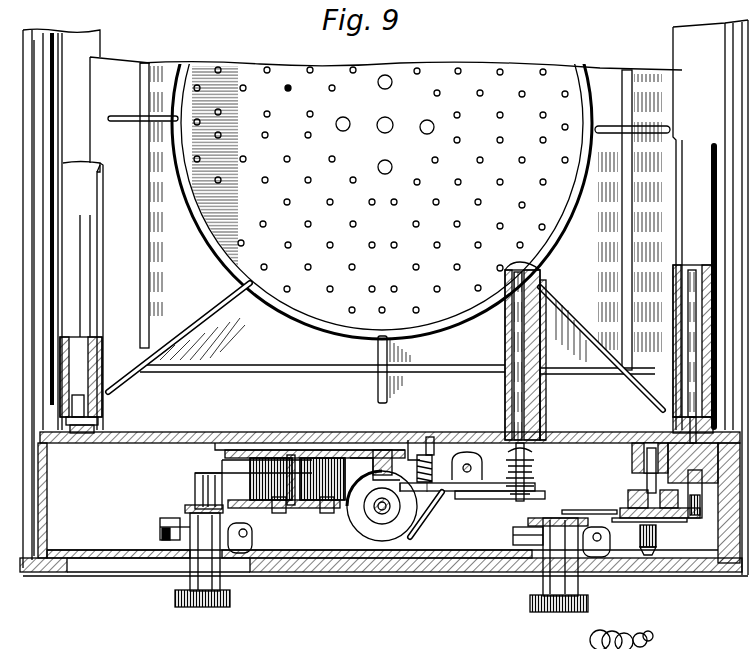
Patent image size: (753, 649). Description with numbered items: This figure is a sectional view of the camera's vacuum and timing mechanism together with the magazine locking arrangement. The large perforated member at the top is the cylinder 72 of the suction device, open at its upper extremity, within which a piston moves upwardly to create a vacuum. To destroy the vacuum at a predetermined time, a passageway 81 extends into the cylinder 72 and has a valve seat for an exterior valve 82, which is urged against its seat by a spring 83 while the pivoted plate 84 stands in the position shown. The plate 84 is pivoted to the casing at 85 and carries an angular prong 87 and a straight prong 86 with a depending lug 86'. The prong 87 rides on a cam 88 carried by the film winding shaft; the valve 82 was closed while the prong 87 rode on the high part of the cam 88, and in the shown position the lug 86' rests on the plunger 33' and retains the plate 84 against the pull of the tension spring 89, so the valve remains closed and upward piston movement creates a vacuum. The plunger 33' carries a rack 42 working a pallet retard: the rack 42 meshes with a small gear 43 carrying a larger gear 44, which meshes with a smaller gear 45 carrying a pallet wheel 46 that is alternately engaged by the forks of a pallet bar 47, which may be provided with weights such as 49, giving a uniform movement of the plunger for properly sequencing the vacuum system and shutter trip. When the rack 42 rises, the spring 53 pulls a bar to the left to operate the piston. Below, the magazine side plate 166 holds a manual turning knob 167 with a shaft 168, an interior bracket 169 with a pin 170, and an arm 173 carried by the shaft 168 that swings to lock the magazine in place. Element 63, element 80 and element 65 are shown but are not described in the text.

The cylinder 72 is at (284, 304).
The passageway 81 is at (515, 351).
The exterior valve 82 is at (546, 420).
The pallet bar 47 is at (207, 432).
The pallet wheel 46 is at (268, 437).
The small gear 43 is at (322, 437).
The rack 42 is at (365, 437).
The depending lug 86' is at (406, 432).
The plunger 33' is at (431, 427).
The tension spring 89 is at (445, 450).
The pivot 85 is at (468, 450).
The spring 83 is at (530, 469).
The plate 63 is at (576, 510).
The weights 49 is at (195, 492).
The arm 173 is at (177, 520).
The pin 170 is at (162, 532).
The shaft 168 is at (182, 555).
The magazine side plate 166 is at (118, 570).
The manual turning knob 167 is at (208, 607).
The bracket 169 is at (376, 508).
The cam 88 is at (360, 540).
The smaller gear 45 is at (285, 505).
The larger gear 44 is at (307, 507).
The straight prong 86 is at (467, 504).
The angular prong 87 is at (425, 528).
The pivoted plate 84 is at (494, 500).
The screw 80 is at (641, 545).
The bracket 65 is at (673, 525).
The spring 53 is at (605, 632).